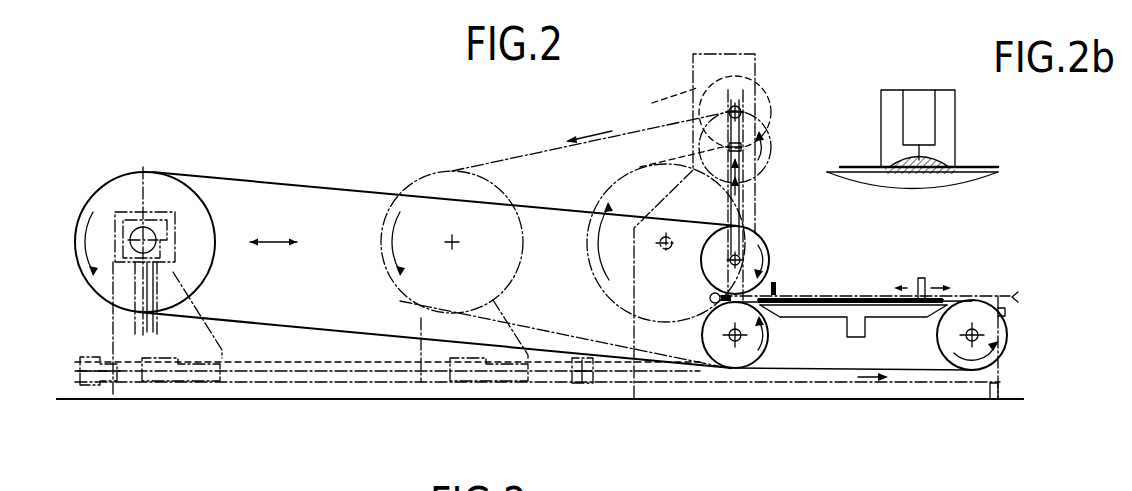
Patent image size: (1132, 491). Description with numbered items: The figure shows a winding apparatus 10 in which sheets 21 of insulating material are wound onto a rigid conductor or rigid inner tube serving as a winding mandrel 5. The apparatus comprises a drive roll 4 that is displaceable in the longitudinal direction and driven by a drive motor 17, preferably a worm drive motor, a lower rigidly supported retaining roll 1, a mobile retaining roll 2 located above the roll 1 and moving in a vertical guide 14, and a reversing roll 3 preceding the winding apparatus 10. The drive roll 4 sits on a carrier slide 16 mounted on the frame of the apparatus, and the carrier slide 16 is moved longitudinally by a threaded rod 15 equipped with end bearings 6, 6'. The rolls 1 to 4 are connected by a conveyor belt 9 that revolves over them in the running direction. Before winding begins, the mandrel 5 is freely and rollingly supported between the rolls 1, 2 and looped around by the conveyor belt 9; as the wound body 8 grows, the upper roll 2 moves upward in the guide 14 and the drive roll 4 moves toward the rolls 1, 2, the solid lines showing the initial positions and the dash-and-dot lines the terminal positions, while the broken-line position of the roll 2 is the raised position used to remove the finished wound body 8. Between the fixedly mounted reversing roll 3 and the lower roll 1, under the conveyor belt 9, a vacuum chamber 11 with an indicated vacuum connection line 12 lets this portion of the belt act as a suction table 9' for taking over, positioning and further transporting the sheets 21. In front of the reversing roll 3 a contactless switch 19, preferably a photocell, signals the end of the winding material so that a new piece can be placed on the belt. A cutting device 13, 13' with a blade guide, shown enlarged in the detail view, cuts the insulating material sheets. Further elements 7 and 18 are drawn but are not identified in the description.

In FIG. 2, the winding apparatus 10 is at (288, 96).
In FIG. 2, the drive roll 4 is at (108, 202).
In FIG. 2, the drive motor 17 is at (137, 232).
In FIG. 2, the carrier slide 16 is at (208, 360).
In FIG. 2, the threaded rod 15 is at (330, 372).
In FIG. 2, the end bearing 6 is at (99, 404).
In FIG. 2, the end bearing 6' is at (579, 402).
In FIG. 2, the base frame 18 is at (548, 393).
In FIG. 2, the wound body 8 is at (662, 180).
In FIG. 2, the mobile retaining roll 2 is at (758, 98).
In FIG. 2, the vertical guide 14 is at (743, 195).
In FIG. 2, the conveyor belt 9 is at (555, 269).
In FIG. 2B, the conveyor belt 9 is at (919, 195).
In FIG. 2, the winding mandrel 5 is at (708, 313).
In FIG. 2, the lower retaining roll 1 is at (728, 350).
In FIG. 2, the reversing roll 3 is at (963, 315).
In FIG. 2, the stop 7 is at (775, 280).
In FIG. 2, the sheet 21 is at (826, 295).
In FIG. 2, the suction table 9' is at (853, 267).
In FIG. 2, the vacuum chamber 11 is at (913, 310).
In FIG. 2B, the vacuum chamber 11 is at (885, 180).
In FIG. 2, the cutting device 13 is at (922, 265).
In FIG. 2B, the cutting device 13 is at (897, 128).
In FIG. 2B, the cutting device 13' is at (945, 141).
In FIG. 2, the contactless switch 19 is at (1002, 308).
In FIG. 2, the vacuum connection line 12 is at (855, 327).